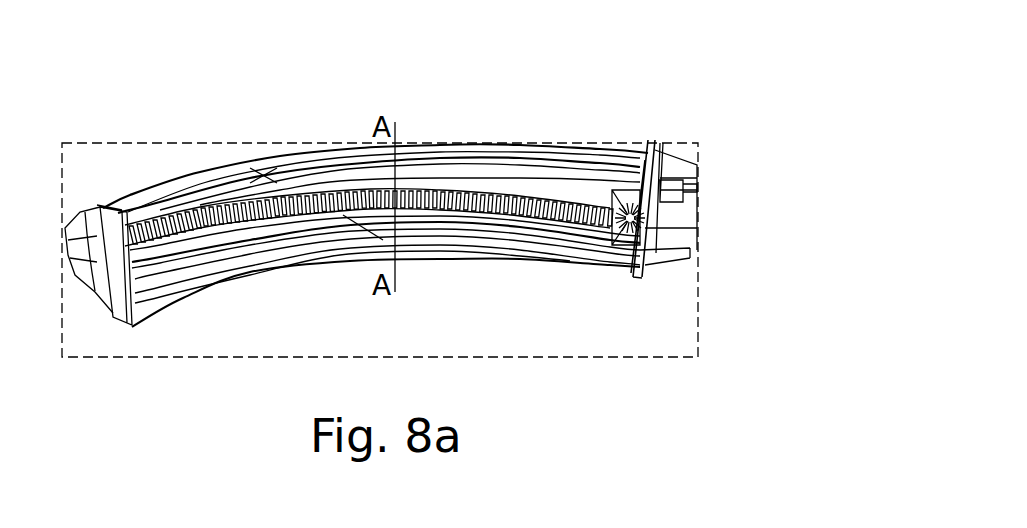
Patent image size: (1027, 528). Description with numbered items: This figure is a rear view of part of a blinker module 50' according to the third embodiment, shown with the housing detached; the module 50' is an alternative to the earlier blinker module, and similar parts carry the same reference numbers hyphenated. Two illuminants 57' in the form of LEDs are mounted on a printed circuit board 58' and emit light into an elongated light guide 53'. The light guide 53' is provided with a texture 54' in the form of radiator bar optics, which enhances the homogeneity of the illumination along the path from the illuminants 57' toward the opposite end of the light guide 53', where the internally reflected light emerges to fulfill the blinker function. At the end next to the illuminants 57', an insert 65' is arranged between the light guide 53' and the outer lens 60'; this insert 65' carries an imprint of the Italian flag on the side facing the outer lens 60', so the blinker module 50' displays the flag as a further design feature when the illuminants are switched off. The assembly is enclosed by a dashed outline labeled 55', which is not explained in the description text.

The blinker module 50' is at (735, 198).
The light guide 53' is at (367, 143).
The texture 54' is at (371, 142).
The housing 55' is at (407, 187).
The illuminants 57' is at (623, 277).
The printed circuit board 58' is at (722, 202).
The outer lens 60' is at (356, 183).
The insert 65' is at (385, 314).